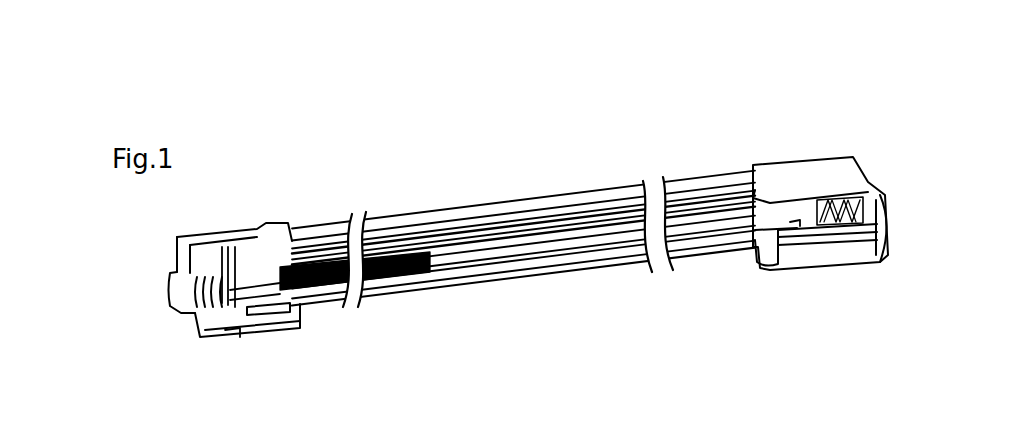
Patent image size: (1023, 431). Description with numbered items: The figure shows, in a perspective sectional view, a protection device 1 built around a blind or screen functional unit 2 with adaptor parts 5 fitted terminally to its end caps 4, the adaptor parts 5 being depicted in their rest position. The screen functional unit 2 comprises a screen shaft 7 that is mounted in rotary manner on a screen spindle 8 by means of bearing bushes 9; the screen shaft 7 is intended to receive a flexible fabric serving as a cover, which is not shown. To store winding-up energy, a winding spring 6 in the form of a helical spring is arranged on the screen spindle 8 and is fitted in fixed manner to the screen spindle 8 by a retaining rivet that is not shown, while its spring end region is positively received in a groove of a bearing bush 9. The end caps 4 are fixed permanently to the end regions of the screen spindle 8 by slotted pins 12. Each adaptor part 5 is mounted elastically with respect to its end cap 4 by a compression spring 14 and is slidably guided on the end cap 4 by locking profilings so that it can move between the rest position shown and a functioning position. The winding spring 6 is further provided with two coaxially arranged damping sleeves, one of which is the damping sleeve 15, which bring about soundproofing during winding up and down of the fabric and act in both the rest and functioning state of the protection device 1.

The protection device 1 is at (903, 148).
The screen functional unit 2 is at (599, 420).
The end caps 4 is at (233, 340).
The adaptor parts 5 is at (196, 343).
The winding spring 6 is at (403, 262).
The screen shaft 7 is at (808, 198).
The screen spindle 8 is at (522, 262).
The bearing bushes 9 is at (258, 270).
The slotted pins 12 is at (941, 428).
The compression springs 14 is at (175, 293).
The damping sleeve 15 is at (381, 412).